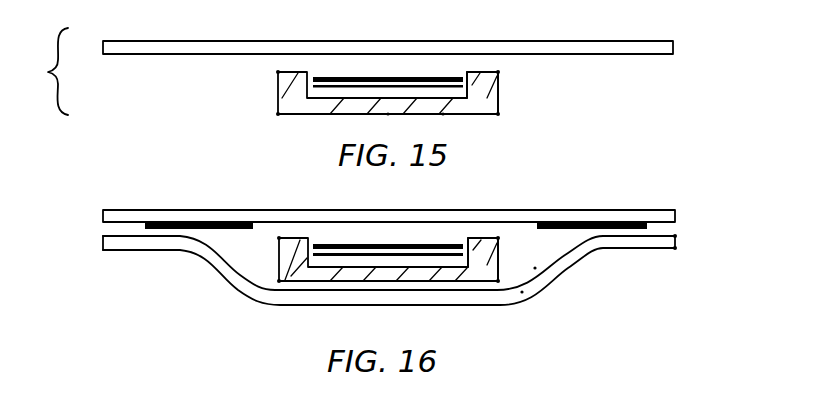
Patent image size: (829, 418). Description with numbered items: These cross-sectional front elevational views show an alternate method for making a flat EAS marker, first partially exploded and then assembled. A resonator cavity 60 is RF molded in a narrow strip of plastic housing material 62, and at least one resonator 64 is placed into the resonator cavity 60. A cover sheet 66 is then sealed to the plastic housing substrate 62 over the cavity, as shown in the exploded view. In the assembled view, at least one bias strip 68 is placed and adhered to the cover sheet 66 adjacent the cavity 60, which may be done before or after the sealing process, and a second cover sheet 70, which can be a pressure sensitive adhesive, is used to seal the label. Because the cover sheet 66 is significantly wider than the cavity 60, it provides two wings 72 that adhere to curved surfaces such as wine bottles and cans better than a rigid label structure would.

In FIG. 15, the resonator cavity 60 is at (317, 93).
In FIG. 16, the resonator cavity 60 is at (352, 262).
In FIG. 15, the plastic housing material 62 is at (498, 94).
In FIG. 16, the plastic housing material 62 is at (483, 262).
In FIG. 15, the resonator 64 is at (350, 84).
In FIG. 16, the resonator 64 is at (395, 251).
In FIG. 15, the cover sheet 66 is at (603, 46).
In FIG. 16, the cover sheet 66 is at (657, 210).
In FIG. 16, the bias strip 68 is at (202, 230).
In FIG. 16, the second cover sheet 70 is at (658, 250).
In FIG. 16, the wings 72 is at (163, 205).